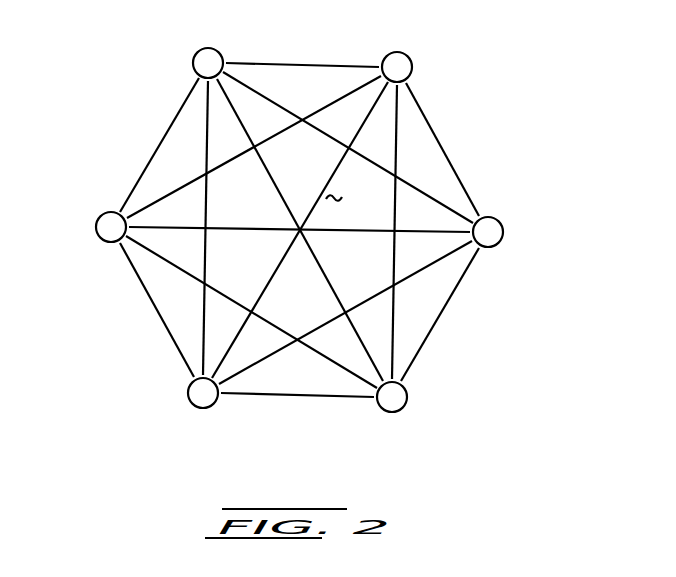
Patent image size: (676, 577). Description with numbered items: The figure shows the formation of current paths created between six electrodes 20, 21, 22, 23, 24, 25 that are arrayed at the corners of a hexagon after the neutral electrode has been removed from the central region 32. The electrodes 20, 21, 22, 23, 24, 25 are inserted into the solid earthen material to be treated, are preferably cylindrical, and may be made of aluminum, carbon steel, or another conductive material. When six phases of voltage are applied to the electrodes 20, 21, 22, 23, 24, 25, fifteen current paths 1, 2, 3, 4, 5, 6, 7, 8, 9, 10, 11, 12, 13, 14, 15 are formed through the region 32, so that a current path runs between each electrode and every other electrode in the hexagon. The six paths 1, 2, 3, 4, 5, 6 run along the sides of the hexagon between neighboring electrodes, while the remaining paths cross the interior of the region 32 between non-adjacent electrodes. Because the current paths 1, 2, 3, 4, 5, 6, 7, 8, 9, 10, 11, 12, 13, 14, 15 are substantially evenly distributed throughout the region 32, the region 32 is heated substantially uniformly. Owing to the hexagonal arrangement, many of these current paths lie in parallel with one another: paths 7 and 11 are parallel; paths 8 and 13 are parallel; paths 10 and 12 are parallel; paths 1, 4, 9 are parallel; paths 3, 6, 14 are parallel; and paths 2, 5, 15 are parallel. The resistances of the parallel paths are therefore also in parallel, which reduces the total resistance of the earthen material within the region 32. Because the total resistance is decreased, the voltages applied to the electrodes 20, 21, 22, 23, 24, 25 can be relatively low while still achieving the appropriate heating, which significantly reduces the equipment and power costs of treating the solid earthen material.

The current path 1 is at (358, 63).
The current path 2 is at (185, 100).
The current path 3 is at (128, 264).
The current path 4 is at (248, 397).
The current path 5 is at (420, 347).
The current path 6 is at (465, 187).
The current path 7 is at (393, 195).
The current path 8 is at (268, 95).
The current path 9 is at (183, 233).
The current path 10 is at (378, 293).
The current path 11 is at (205, 132).
The current path 12 is at (228, 162).
The current path 13 is at (228, 294).
The current path 14 is at (335, 292).
The current path 15 is at (328, 177).
The electrode 20 is at (492, 236).
The electrode 21 is at (401, 68).
The electrode 22 is at (210, 58).
The electrode 23 is at (107, 225).
The electrode 24 is at (200, 397).
The electrode 25 is at (392, 400).
The region 32 is at (335, 195).